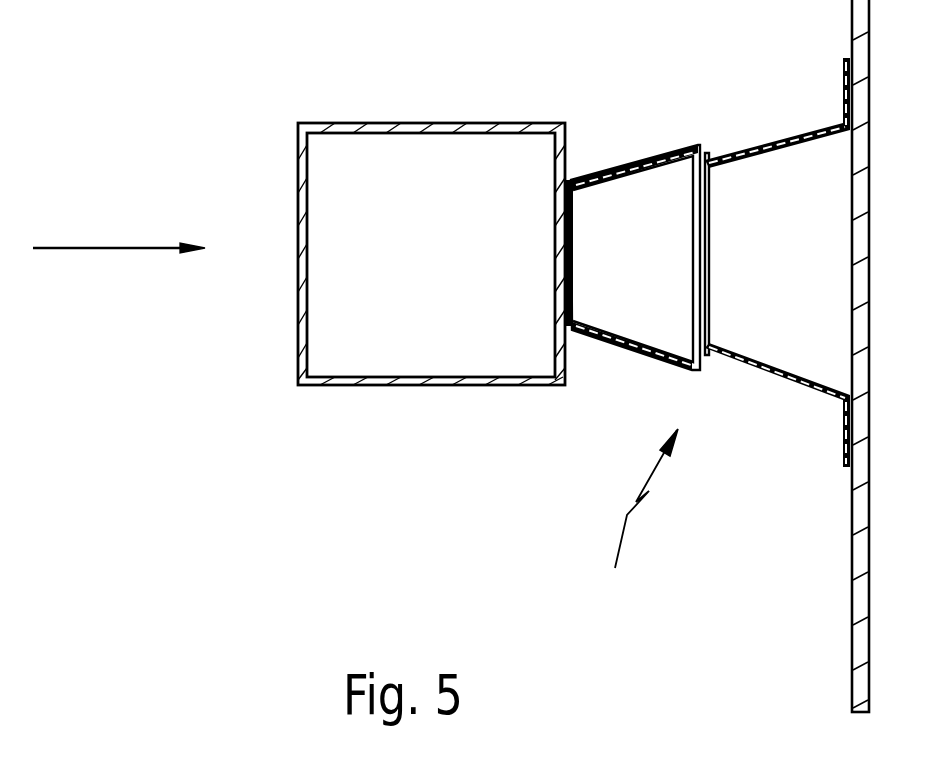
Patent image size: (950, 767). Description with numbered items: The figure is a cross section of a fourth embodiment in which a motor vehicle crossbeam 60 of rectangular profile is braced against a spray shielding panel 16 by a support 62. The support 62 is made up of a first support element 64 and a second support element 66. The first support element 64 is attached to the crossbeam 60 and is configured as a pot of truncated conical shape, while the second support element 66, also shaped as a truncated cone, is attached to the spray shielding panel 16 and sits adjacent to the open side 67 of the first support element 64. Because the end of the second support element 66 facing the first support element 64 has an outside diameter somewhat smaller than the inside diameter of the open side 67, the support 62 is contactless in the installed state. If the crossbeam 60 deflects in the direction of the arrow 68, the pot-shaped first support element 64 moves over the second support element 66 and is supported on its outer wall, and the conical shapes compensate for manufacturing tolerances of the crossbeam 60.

The spray shielding panel 16 is at (860, 641).
The crossbeam 60 is at (320, 380).
The support 62 is at (643, 518).
The first support element 64 is at (602, 344).
The second support element 66 is at (782, 388).
The open side 67 is at (708, 163).
The arrow 68 is at (90, 247).